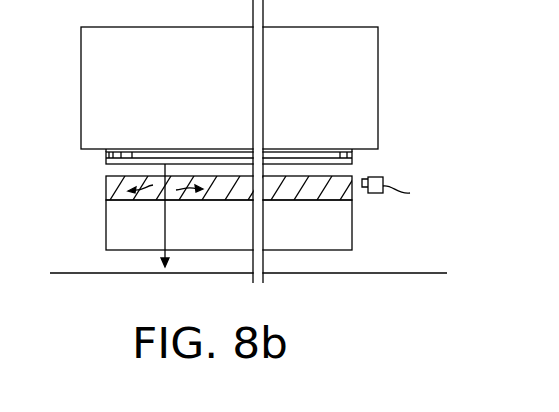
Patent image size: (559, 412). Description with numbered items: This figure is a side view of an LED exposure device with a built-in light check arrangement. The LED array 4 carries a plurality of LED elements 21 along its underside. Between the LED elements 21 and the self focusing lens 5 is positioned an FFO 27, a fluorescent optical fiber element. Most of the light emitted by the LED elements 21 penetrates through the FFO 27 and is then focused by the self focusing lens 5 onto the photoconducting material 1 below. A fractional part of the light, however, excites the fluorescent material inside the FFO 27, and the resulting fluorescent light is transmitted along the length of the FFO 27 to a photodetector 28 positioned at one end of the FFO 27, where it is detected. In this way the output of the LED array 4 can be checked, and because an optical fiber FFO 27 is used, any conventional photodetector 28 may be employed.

The LED array 4 is at (152, 27).
The LED elements 21 is at (353, 164).
The FFO 27 is at (107, 199).
The self focusing lens 5 is at (108, 240).
The photodetector 28 is at (384, 203).
The photoconducting material 1 is at (92, 274).